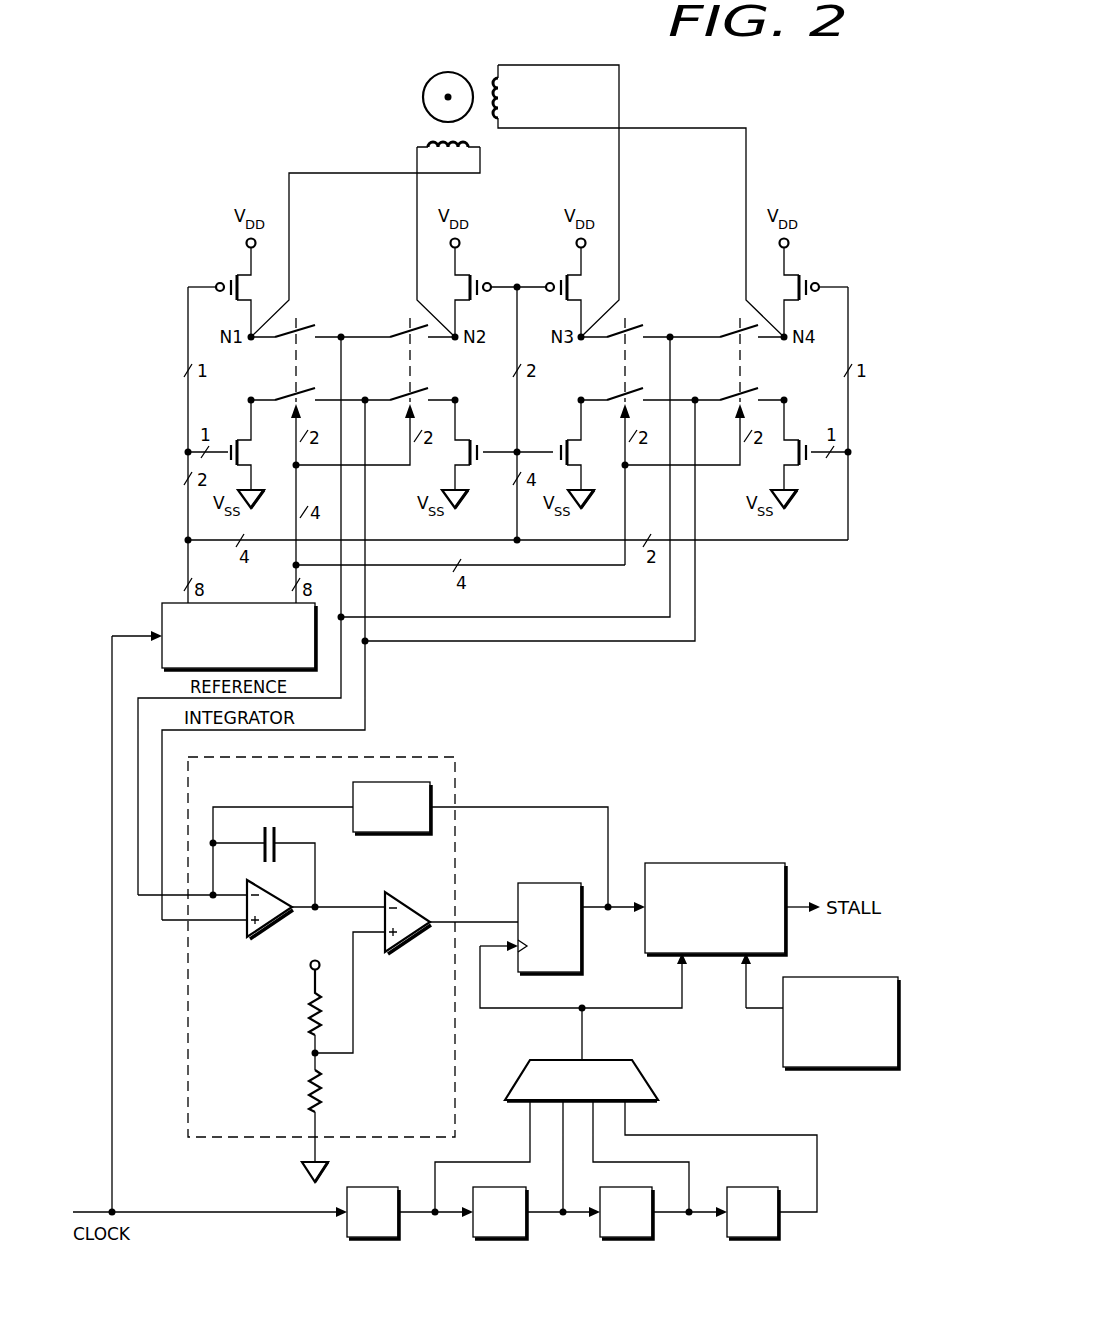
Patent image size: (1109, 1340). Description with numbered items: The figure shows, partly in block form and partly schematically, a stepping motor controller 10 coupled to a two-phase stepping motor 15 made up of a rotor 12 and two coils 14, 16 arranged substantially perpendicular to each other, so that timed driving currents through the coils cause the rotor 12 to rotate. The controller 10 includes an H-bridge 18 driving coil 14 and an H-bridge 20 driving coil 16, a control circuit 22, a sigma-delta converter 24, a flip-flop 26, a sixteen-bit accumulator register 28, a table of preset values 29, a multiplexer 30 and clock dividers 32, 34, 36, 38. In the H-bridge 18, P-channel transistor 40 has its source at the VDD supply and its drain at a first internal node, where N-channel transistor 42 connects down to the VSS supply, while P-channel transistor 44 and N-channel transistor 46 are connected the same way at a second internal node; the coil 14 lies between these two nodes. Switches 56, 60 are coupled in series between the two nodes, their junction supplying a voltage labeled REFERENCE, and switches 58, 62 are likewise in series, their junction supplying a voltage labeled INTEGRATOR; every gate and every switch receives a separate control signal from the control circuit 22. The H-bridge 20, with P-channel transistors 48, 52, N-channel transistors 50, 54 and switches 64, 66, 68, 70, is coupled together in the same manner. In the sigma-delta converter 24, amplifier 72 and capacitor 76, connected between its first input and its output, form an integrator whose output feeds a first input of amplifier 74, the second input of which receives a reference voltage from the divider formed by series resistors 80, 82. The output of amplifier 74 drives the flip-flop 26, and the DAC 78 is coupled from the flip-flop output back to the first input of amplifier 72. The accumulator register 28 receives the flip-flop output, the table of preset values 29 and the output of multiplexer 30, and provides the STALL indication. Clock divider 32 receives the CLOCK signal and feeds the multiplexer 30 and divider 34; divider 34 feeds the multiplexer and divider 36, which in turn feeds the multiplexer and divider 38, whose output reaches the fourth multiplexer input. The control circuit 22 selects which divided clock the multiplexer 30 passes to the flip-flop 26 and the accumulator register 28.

The stepping motor controller 10 is at (176, 60).
The rotor 12 is at (432, 76).
The coil 14 is at (426, 140).
The two-phase stepping motor 15 is at (522, 48).
The coil 16 is at (493, 75).
The H-bridge 18 is at (194, 212).
The H-bridge 20 is at (840, 212).
The control circuit 22 is at (162, 613).
The sigma-delta converter 24 is at (428, 757).
The flip-flop 26 is at (553, 883).
The 16-bit accumulator register 28 is at (745, 864).
The table of preset values 29 is at (858, 977).
The multiplexer 30 is at (648, 1082).
The clock divider 32 is at (376, 1187).
The divider 34 is at (529, 1199).
The divider 36 is at (600, 1199).
The divider 38 is at (756, 1187).
The P-channel transistor 40 is at (240, 284).
The N-channel transistor 42 is at (245, 463).
The P-channel transistor 44 is at (468, 284).
The N-channel transistor 46 is at (460, 460).
The P-channel transistor 48 is at (569, 284).
The N-channel transistor 50 is at (575, 463).
The P-channel transistor 52 is at (797, 284).
The N-channel transistor 54 is at (788, 460).
The switch 56 is at (285, 346).
The switch 58 is at (285, 409).
The switch 60 is at (400, 346).
The switch 62 is at (400, 409).
The switch 64 is at (615, 346).
The switch 66 is at (615, 409).
The switch 68 is at (730, 346).
The switch 70 is at (730, 409).
The amplifier 72 is at (261, 940).
The amplifier 74 is at (411, 947).
The capacitor 76 is at (276, 860).
The digital-to-analog converter 78 is at (390, 842).
The resistor 80 is at (302, 1008).
The resistor 82 is at (302, 1083).